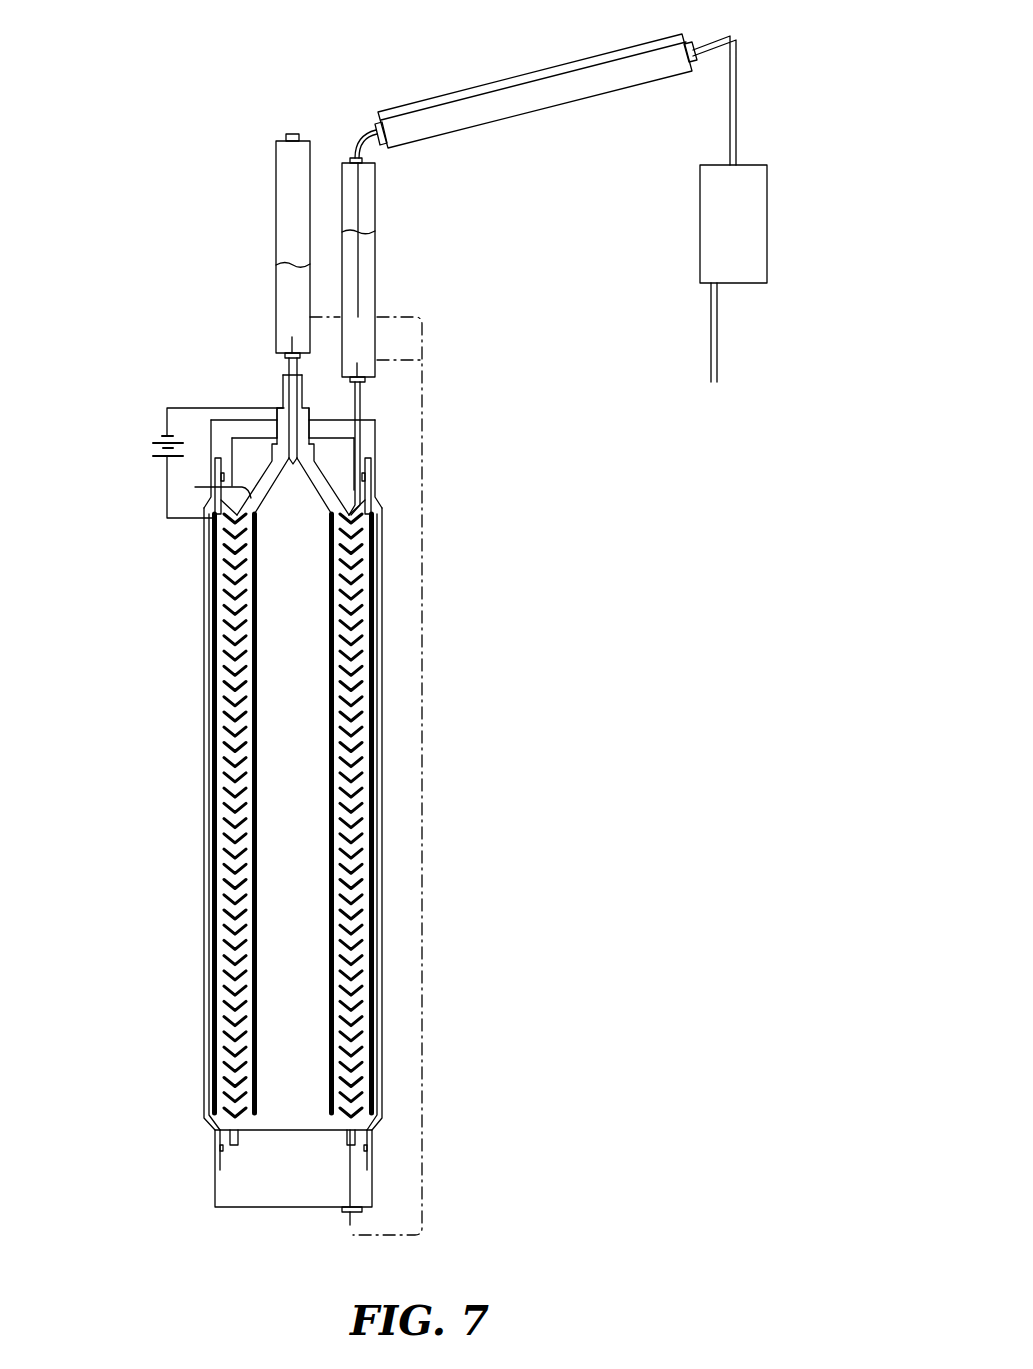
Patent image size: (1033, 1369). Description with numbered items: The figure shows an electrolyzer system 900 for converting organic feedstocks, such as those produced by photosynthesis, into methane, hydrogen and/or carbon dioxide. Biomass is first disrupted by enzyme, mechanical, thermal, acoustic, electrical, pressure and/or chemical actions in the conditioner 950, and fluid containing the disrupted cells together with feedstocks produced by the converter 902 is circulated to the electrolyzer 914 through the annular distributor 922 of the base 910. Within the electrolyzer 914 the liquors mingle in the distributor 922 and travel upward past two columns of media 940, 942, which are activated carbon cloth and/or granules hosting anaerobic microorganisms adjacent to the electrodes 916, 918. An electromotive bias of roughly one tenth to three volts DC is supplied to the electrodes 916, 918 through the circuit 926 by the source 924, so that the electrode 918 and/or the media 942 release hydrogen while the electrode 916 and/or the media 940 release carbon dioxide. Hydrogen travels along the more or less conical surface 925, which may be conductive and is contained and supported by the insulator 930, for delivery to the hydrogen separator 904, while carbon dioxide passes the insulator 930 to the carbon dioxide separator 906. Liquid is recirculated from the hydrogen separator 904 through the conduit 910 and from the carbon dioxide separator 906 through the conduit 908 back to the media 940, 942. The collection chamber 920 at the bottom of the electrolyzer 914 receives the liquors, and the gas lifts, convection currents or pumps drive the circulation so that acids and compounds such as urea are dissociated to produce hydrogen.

The electrolyzer system 900 is at (143, 48).
The converter 902 is at (533, 110).
The hydrogen separator 904 is at (277, 185).
The carbon dioxide separator 906 is at (377, 220).
The conduit 908 is at (407, 360).
The base 910 is at (402, 317).
The electrolyzer 914 is at (205, 690).
The electrode 916 is at (355, 645).
The electrode 918 is at (348, 715).
The collection chamber 920 is at (232, 1187).
The annular distributor 922 is at (228, 1131).
The source 924 is at (155, 440).
The conical surface 925 is at (195, 487).
The circuit 926 is at (208, 406).
The insulator 930 is at (333, 462).
The media 940 is at (383, 520).
The media 942 is at (331, 601).
The conditioner 950 is at (700, 227).